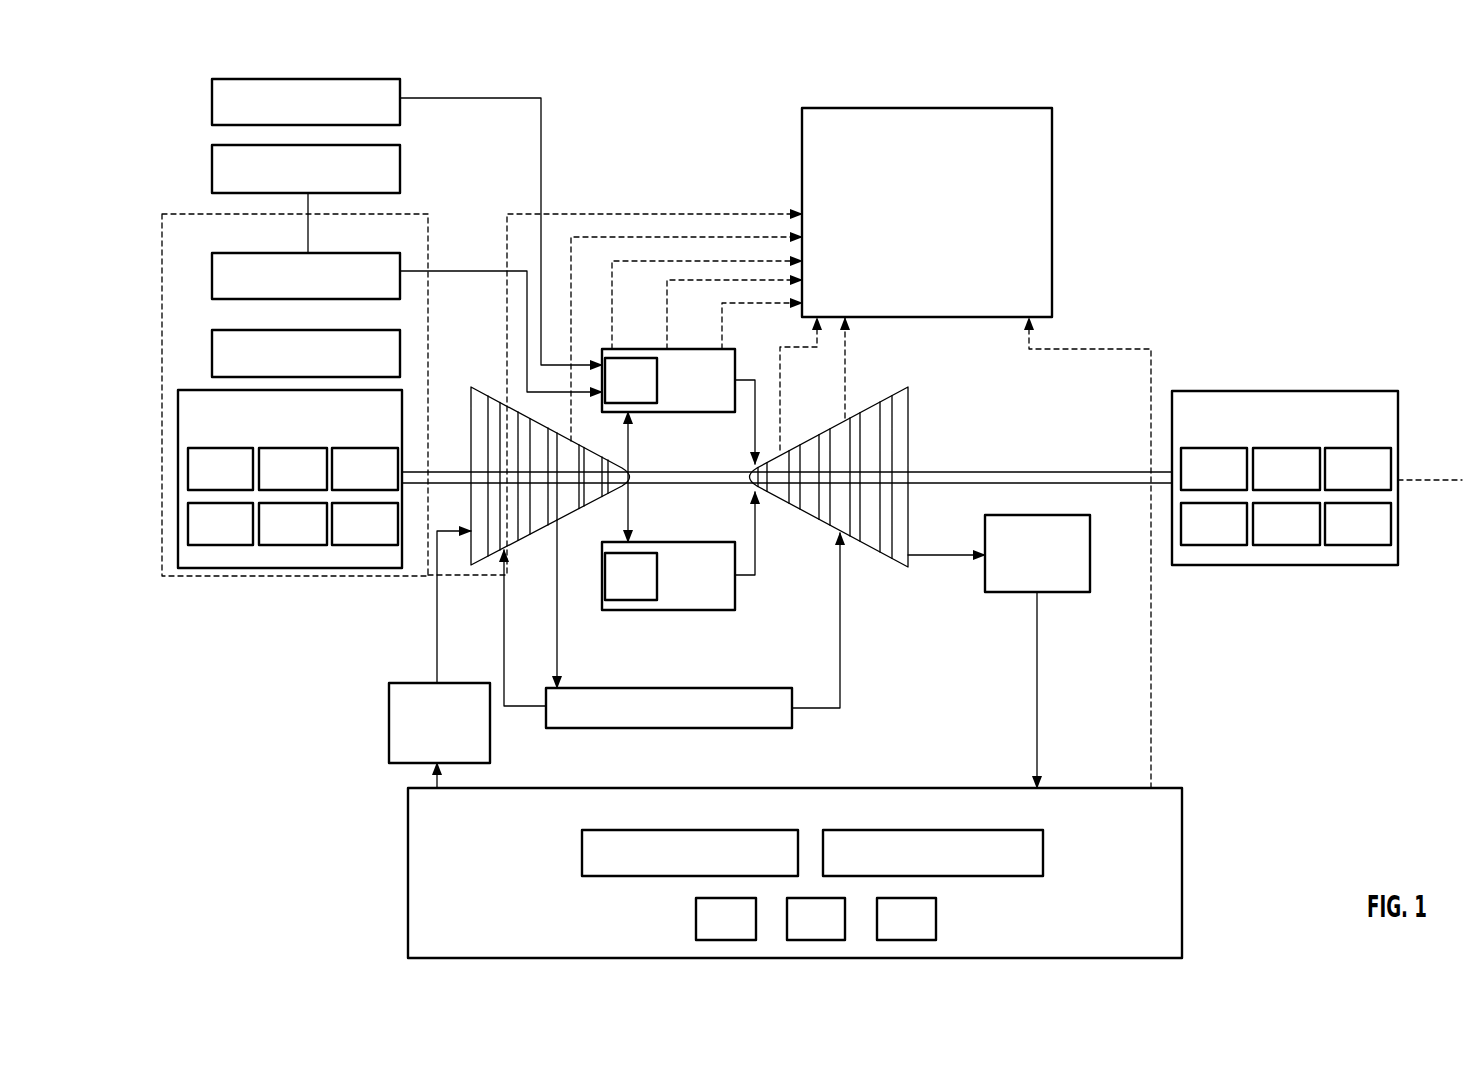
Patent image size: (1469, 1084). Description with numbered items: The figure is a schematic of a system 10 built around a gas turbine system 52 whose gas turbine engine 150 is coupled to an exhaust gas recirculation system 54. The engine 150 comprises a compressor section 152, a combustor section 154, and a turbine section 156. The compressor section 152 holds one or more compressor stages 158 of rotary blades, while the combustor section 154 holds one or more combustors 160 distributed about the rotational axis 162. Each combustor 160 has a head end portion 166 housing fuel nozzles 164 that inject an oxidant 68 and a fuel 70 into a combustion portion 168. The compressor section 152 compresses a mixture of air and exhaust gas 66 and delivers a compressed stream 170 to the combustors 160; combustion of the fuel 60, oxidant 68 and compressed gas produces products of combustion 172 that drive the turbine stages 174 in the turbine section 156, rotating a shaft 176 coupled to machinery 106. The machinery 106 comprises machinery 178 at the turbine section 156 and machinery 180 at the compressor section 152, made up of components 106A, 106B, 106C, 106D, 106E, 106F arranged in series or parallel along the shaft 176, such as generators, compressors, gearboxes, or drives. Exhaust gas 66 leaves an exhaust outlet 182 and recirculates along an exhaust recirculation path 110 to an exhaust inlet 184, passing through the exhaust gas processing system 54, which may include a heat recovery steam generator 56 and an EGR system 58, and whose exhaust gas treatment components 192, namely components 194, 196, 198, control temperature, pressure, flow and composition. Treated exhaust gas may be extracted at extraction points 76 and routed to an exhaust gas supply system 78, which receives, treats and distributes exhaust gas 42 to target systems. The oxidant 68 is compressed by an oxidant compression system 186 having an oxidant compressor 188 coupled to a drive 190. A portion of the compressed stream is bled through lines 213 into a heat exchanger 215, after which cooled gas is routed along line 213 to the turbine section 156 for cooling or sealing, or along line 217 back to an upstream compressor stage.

The system 10 is at (1106, 74).
The exhaust gas 42 is at (1152, 605).
The gas turbine system 52 is at (896, 636).
The exhaust gas recirculation (EGR) system 54 is at (893, 788).
The heat recovery steam generator (HRSG) 56 is at (941, 871).
The exhaust gas recirculation (EGR) system 58 is at (698, 871).
The fuel 60 is at (1090, 546).
The exhaust gas 66 is at (388, 698).
The oxidant 68 is at (317, 185).
The fuel 70 is at (317, 118).
The extraction points 76 is at (633, 349).
The exhaust gas supply system 78 is at (985, 108).
The machinery 106 is at (788, 489).
The machinery component 106A is at (242, 485).
The machinery component 106B is at (315, 485).
The machinery component 106C is at (387, 485).
The machinery component 106D is at (242, 540).
The machinery component 106E is at (315, 540).
The machinery component 106F is at (387, 540).
The exhaust recirculation path 110 is at (437, 618).
The gas turbine engine 150 is at (876, 363).
The compressor section 152 is at (468, 396).
The combustor section 154 is at (771, 604).
The turbine section 156 is at (926, 391).
The compressor stages 158 is at (539, 532).
The combustors 160 is at (668, 413).
The rotational axis 162 is at (1446, 476).
The fuel nozzles 164 is at (647, 396).
The head end portion 166 is at (648, 612).
The combustion portion 168 is at (719, 389).
The compressed stream 170 is at (630, 506).
The products of combustion 172 is at (757, 395).
The turbine stages 174 is at (908, 447).
The shaft 176 is at (1031, 471).
The machinery 178 is at (1251, 391).
The machinery 180 is at (287, 569).
The exhaust outlet 182 is at (908, 512).
The exhaust inlet 184 is at (471, 566).
The oxidant compression system 186 is at (140, 322).
The oxidant compressor 188 is at (324, 292).
The drive 190 is at (324, 370).
The exhaust gas treatment components 192 is at (1214, 873).
The exhaust gas treatment component 194 is at (922, 934).
The exhaust gas treatment component 196 is at (832, 934).
The exhaust gas treatment component 198 is at (741, 934).
The lines 213 is at (558, 640).
The heat exchanger 215 is at (684, 726).
The line 217 is at (506, 683).